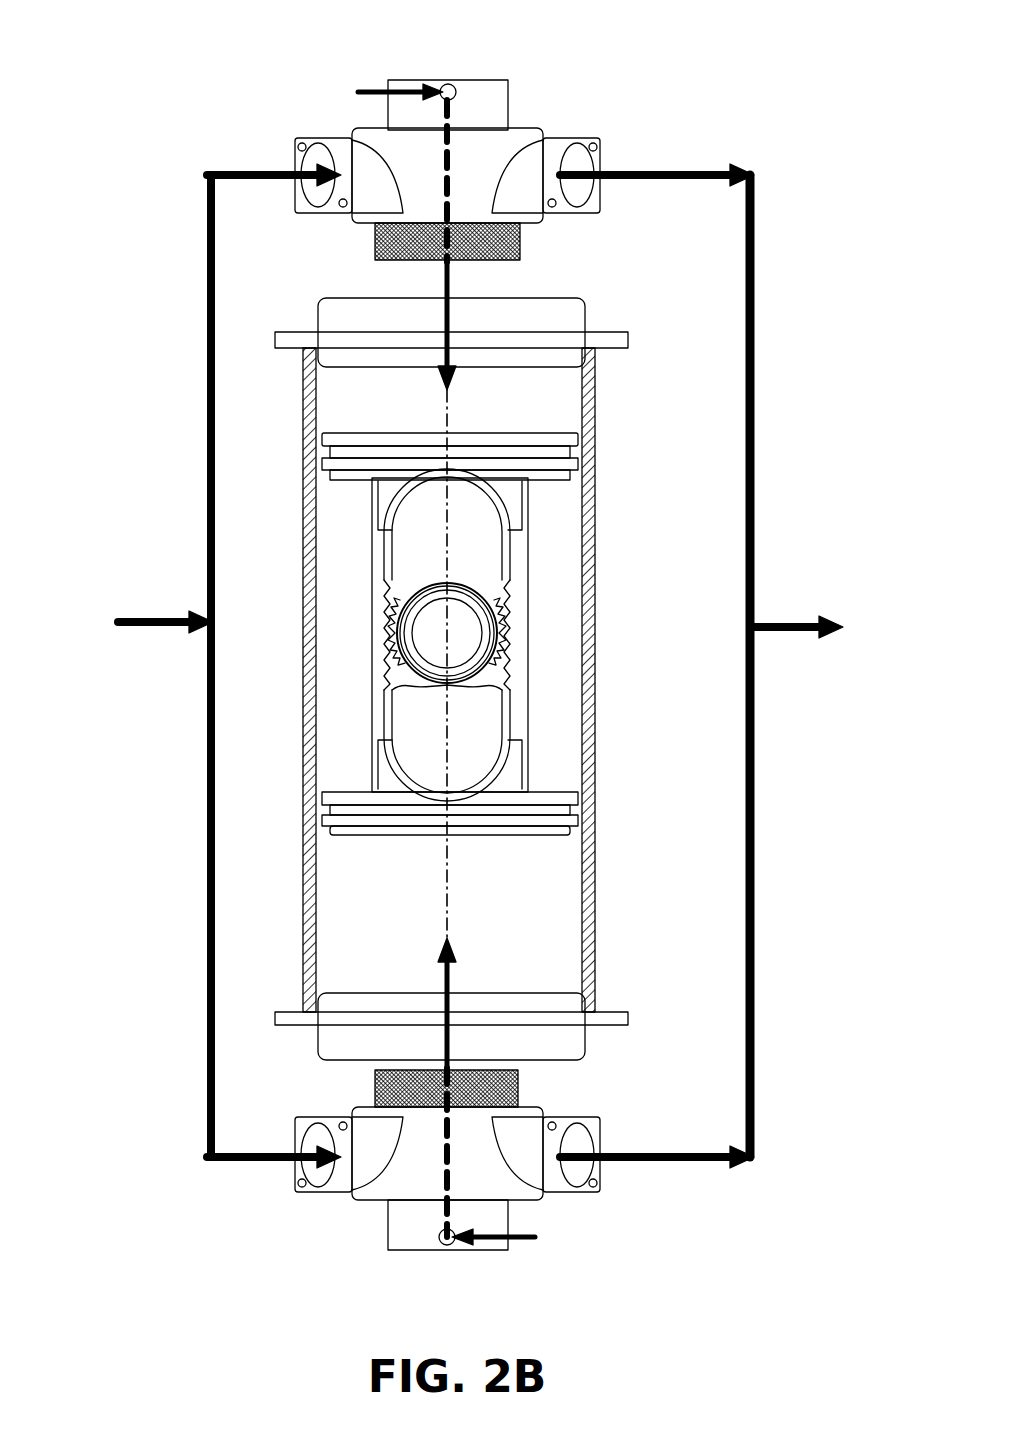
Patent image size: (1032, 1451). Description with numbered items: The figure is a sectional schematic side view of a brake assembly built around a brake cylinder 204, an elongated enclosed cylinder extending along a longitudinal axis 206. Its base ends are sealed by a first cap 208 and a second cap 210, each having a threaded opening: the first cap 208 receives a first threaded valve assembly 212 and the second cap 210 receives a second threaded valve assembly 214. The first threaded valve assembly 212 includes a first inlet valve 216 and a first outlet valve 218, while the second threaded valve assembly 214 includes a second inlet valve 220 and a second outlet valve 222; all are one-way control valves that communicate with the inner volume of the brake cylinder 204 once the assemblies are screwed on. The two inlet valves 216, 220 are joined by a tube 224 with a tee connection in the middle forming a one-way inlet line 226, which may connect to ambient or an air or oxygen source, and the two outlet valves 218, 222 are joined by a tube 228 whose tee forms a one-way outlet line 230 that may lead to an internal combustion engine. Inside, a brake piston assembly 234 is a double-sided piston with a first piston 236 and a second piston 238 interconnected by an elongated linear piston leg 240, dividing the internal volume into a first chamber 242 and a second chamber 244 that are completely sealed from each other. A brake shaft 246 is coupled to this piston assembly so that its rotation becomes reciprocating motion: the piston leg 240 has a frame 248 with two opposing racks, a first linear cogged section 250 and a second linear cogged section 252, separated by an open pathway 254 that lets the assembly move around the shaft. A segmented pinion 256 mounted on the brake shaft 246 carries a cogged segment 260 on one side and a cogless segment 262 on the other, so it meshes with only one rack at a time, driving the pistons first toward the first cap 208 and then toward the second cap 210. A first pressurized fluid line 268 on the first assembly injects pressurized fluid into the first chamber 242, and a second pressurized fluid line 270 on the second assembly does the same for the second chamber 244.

The brake cylinder 204 is at (467, 674).
The longitudinal axis 206 is at (447, 400).
The first cap 208 is at (585, 313).
The second cap 210 is at (318, 1048).
The first threaded valve assembly 212 is at (447, 132).
The second threaded valve assembly 214 is at (457, 1195).
The first inlet valve 216 is at (330, 130).
The first outlet valve 218 is at (565, 130).
The second inlet valve 220 is at (342, 1192).
The second outlet valve 222 is at (570, 1192).
The tube 224 is at (207, 475).
The one-way inlet line 226 is at (163, 617).
The tube 228 is at (755, 463).
The one-way outlet line 230 is at (792, 633).
The brake piston assembly 234 is at (397, 639).
The first piston 236 is at (548, 410).
The second piston 238 is at (545, 835).
The elongated linear piston leg 240 is at (365, 485).
The first chamber 242 is at (386, 426).
The second chamber 244 is at (357, 916).
The brake shaft 246 is at (451, 640).
The frame 248 is at (528, 702).
The first linear cogged section 250 is at (412, 690).
The second linear cogged section 252 is at (487, 678).
The open pathway 254 is at (505, 556).
The segmented pinion 256 is at (474, 590).
The cogged segment 260 is at (396, 612).
The cogless segment 262 is at (505, 622).
The first pressurized fluid line 268 is at (322, 72).
The second pressurized fluid line 270 is at (580, 1260).